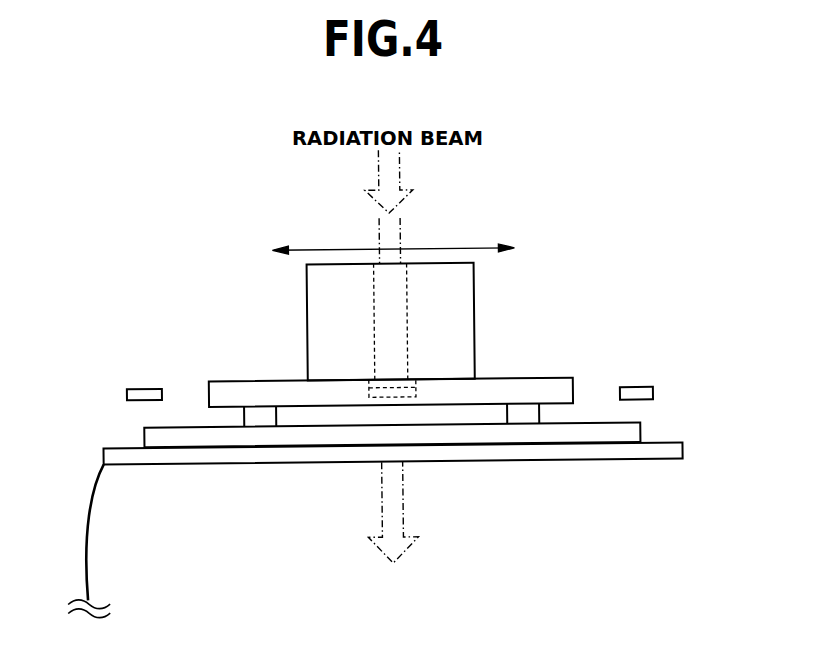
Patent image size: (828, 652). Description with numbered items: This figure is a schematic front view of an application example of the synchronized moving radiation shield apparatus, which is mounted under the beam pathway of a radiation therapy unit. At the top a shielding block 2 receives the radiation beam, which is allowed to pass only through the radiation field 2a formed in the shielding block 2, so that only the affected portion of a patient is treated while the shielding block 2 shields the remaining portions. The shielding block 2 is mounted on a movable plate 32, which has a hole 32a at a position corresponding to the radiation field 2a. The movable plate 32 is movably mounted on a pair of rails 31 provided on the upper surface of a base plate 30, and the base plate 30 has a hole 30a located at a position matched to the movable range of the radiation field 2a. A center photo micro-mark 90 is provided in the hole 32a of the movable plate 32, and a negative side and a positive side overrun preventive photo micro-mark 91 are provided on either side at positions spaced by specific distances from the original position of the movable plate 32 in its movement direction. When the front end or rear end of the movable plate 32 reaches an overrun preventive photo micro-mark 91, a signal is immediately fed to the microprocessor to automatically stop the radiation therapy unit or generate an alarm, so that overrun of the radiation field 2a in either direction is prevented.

The shielding block 2 is at (464, 294).
The radiation field 2a is at (388, 301).
The base plate 30 is at (605, 452).
The hole 30a is at (260, 445).
The rails 31 is at (175, 435).
The movable plate 32 is at (540, 390).
The hole 32a is at (416, 389).
The center photo micro-mark 90 is at (368, 395).
The overrun preventive photo micro-mark 91 is at (142, 388).